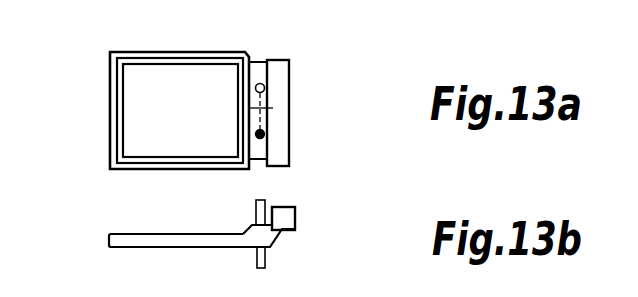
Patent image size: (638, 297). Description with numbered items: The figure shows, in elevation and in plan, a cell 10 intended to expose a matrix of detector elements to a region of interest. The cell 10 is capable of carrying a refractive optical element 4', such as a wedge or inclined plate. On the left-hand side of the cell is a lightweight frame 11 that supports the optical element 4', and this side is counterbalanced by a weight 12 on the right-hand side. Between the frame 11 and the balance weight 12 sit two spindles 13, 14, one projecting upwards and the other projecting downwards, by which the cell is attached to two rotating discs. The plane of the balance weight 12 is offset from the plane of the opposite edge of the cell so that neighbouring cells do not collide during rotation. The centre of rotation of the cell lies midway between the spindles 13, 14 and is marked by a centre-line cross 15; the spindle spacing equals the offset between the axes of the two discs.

In FIG. 13A, the refractive optical element 4' is at (143, 110).
In FIG. 13A, the cell 10 is at (138, 122).
In FIG. 13A, the frame 11 is at (117, 78).
In FIG. 13B, the frame 11 is at (109, 240).
In FIG. 13A, the weight 12 is at (278, 98).
In FIG. 13B, the weight 12 is at (285, 215).
In FIG. 13A, the spindle 13 is at (260, 83).
In FIG. 13B, the spindle 13 is at (262, 207).
In FIG. 13A, the spindle 14 is at (264, 137).
In FIG. 13B, the spindle 14 is at (260, 260).
In FIG. 13A, the centre-line cross 15 is at (260, 117).